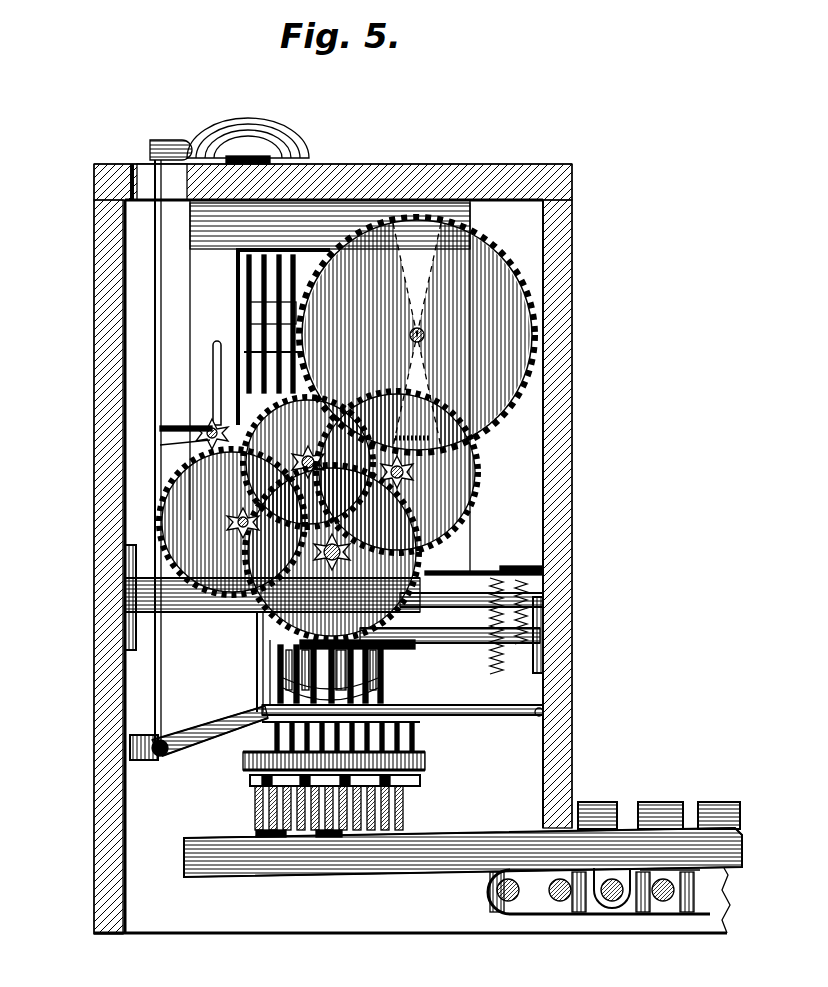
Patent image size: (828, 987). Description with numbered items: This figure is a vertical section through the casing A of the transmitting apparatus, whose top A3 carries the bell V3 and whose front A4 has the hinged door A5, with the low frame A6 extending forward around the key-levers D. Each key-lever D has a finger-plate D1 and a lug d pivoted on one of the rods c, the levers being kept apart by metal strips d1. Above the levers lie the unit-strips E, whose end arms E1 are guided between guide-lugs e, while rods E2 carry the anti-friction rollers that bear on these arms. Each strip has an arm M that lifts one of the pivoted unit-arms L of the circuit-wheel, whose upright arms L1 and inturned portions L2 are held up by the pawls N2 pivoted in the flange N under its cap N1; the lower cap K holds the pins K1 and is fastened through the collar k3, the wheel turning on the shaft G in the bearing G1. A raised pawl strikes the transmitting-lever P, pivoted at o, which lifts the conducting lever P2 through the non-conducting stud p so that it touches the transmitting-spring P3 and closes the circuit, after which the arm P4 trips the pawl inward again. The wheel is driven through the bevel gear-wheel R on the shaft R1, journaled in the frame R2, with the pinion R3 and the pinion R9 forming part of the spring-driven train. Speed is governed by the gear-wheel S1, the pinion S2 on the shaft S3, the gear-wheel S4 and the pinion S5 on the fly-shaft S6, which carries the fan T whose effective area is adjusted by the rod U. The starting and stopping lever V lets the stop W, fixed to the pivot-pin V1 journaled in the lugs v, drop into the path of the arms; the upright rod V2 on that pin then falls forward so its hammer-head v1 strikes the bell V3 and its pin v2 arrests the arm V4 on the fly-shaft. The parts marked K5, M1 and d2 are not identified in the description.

The casing A is at (94, 575).
The top of casing A3 is at (365, 170).
The front of casing A4 is at (572, 712).
The hinged portion A5 is at (572, 480).
The low frame A6 is at (412, 911).
The bell V3 is at (248, 126).
The knob or hammer-head v1 is at (166, 140).
The lever V is at (156, 750).
The shaft or pivot-pin V1 is at (496, 718).
The upright rod V2 is at (190, 330).
The pin v2 is at (160, 428).
The arm V4 is at (170, 440).
The bevel gear-wheel R is at (530, 420).
The shaft R1 is at (308, 462).
The frame R2 is at (236, 300).
The pinion R3 is at (419, 324).
The pinion R9 is at (412, 440).
The guide-lugs e is at (250, 313).
The rod U is at (213, 354).
The cap K is at (430, 556).
The pins K1 is at (282, 572).
The hub K5 is at (332, 560).
The gear-wheel S1 is at (332, 552).
The pinion S2 is at (248, 514).
The shaft S3 is at (302, 546).
The gear-wheel S4 is at (200, 486).
The pinion S5 is at (210, 424).
The fly-shaft S6 is at (200, 430).
The fly or regulating fan T is at (185, 447).
The unit-strips E is at (377, 495).
The arms E1 is at (268, 652).
The rods E2 is at (404, 800).
The shaft G is at (272, 597).
The bearing G1 is at (258, 764).
The flange N is at (390, 690).
The cap N1 is at (390, 668).
The swinging hooks or pawls N2 is at (275, 688).
The transmitting-lever P is at (450, 628).
The lever P2 is at (471, 591).
The transmitting-spring P3 is at (484, 564).
The arm P4 is at (402, 702).
The pin or stud p is at (493, 650).
The pivot o is at (523, 635).
The swinging stop W is at (210, 731).
The ears or lugs v is at (142, 735).
The unit-arms L is at (425, 761).
The arms L1 is at (232, 752).
The inturned portions L2 is at (250, 714).
The collar k3 is at (420, 748).
The arm M is at (420, 780).
The bar M1 is at (250, 782).
The feet d2 is at (256, 834).
The key-levers D is at (463, 852).
The finger-plate D1 is at (596, 802).
The metal strips d1 is at (350, 842).
The rods c is at (500, 915).
The lug d is at (632, 914).